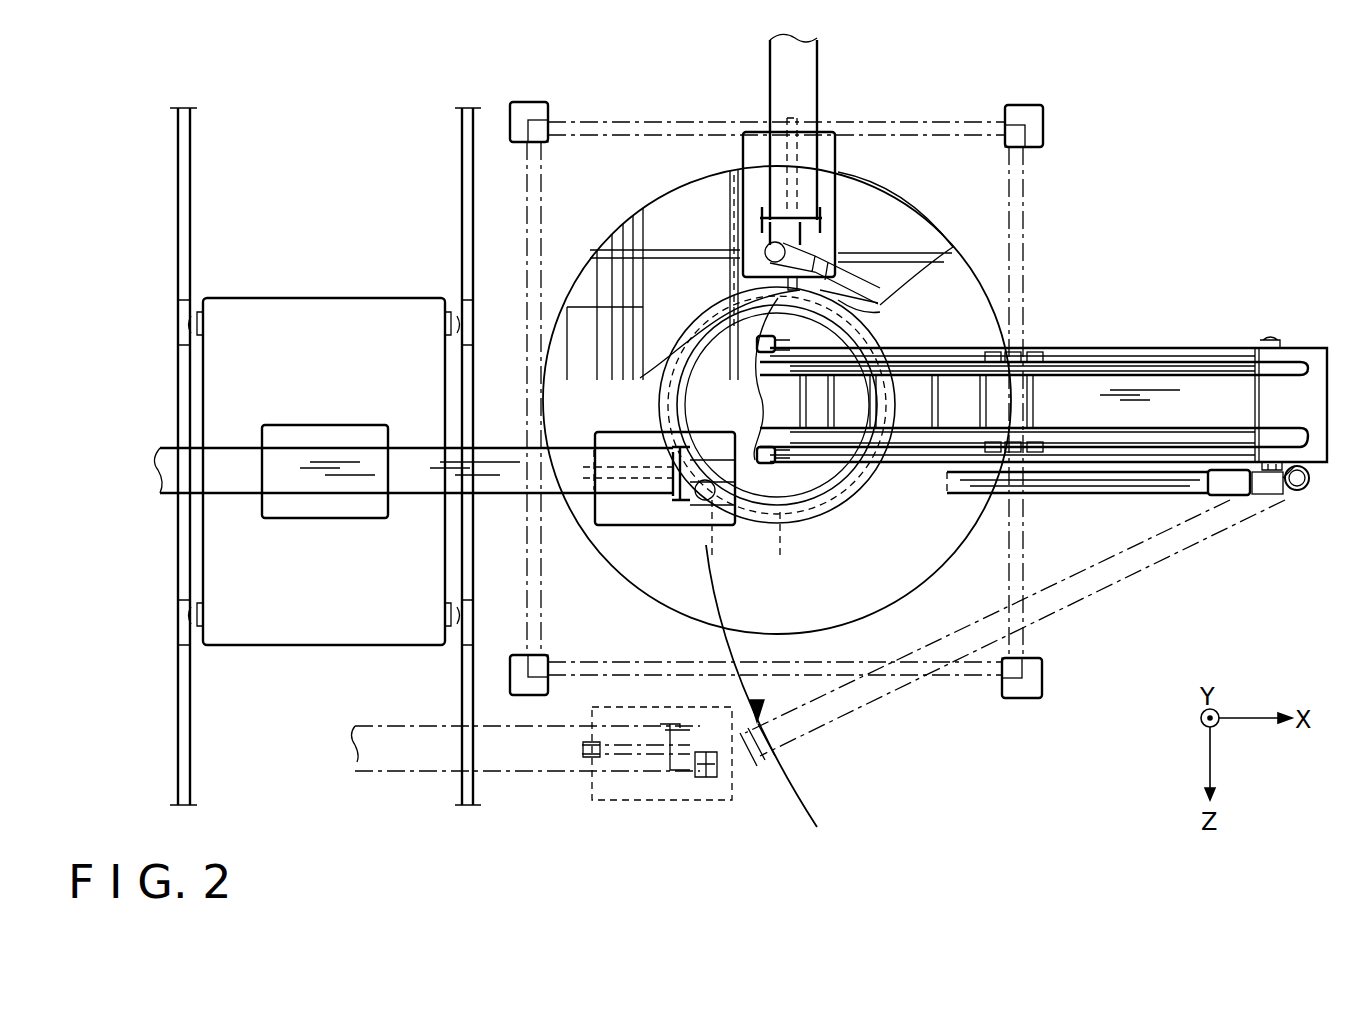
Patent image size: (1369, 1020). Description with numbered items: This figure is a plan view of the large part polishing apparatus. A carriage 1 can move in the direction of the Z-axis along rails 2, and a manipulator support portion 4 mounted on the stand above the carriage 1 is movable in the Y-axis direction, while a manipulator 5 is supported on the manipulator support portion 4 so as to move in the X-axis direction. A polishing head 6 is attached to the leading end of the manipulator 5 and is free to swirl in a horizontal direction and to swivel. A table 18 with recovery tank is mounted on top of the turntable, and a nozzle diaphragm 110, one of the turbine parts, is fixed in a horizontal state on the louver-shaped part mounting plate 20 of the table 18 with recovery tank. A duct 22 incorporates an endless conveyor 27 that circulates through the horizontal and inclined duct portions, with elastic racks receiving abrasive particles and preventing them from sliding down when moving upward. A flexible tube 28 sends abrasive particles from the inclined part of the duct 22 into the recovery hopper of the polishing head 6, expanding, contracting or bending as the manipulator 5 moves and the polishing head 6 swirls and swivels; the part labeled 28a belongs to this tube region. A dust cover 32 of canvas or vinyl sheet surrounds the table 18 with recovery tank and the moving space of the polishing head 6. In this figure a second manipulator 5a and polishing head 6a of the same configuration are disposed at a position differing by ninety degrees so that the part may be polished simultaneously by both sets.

The carriage 1 is at (288, 645).
The rails 2 is at (190, 750).
The manipulator support portion 4 is at (290, 515).
The manipulator 5 is at (233, 455).
The manipulator 5a is at (770, 70).
The polishing head 6 is at (660, 527).
The polishing head 6a is at (825, 148).
The table with recovery tank 18 is at (620, 230).
The louver-shaped part mounting plate 20 is at (575, 283).
The duct 22 is at (1197, 335).
The endless conveyor 27 is at (1100, 360).
The flexible tube 28 is at (1053, 490).
The actuator blade 28a is at (880, 285).
The dust cover 32 is at (1018, 245).
The nozzle diaphragm 110 is at (777, 520).